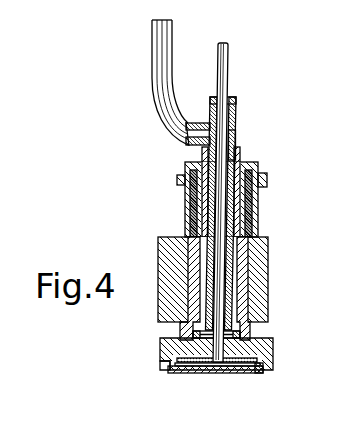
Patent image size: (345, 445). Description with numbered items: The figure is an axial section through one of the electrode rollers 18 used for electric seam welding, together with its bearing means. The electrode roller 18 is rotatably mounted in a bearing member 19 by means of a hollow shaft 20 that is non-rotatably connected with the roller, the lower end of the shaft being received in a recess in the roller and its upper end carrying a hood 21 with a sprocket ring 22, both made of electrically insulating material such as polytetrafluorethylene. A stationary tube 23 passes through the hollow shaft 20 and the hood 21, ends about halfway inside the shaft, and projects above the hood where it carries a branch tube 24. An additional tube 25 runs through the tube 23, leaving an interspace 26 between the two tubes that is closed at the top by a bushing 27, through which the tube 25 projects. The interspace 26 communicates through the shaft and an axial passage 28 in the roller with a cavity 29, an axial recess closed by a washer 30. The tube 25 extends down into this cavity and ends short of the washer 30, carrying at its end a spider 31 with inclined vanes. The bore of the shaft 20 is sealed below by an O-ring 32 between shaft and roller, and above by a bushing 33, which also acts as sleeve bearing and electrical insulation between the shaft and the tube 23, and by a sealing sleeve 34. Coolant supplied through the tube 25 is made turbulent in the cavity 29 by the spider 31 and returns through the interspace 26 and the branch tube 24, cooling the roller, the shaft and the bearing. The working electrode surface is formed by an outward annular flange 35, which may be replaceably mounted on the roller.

The electrode roller 18 is at (275, 349).
The bearing member 19 is at (259, 279).
The hollow shaft 20 is at (257, 331).
The hood 21 is at (259, 199).
The sprocket ring 22 is at (266, 180).
The tube 23 is at (233, 120).
The branch tube 24 is at (161, 66).
The tube 25 is at (228, 55).
The interspace 26 is at (244, 143).
The bushing 27 is at (230, 96).
The axial passage 28 is at (224, 375).
The cavity 29 is at (247, 375).
The washer 30 is at (182, 373).
The spider 31 is at (203, 376).
The O-ring 32 is at (197, 338).
The bushing 33 is at (185, 220).
The sealing sleeve 34 is at (195, 165).
The annular flange 35 is at (160, 360).